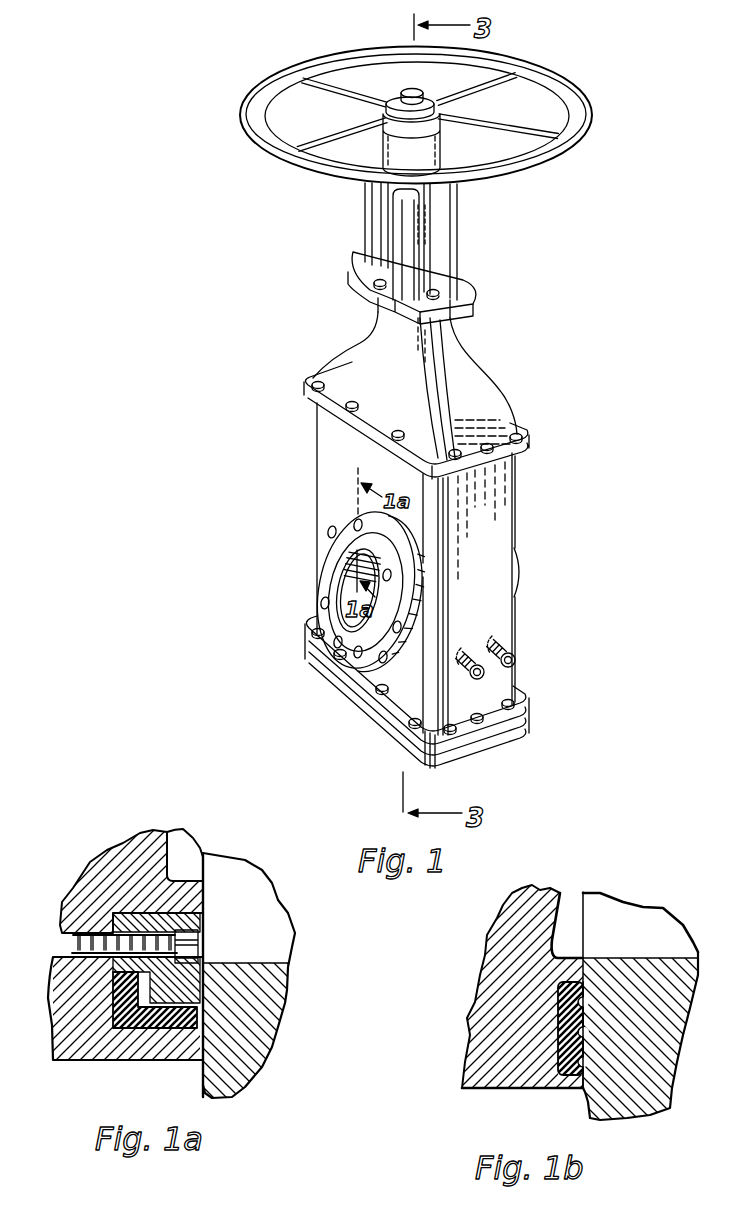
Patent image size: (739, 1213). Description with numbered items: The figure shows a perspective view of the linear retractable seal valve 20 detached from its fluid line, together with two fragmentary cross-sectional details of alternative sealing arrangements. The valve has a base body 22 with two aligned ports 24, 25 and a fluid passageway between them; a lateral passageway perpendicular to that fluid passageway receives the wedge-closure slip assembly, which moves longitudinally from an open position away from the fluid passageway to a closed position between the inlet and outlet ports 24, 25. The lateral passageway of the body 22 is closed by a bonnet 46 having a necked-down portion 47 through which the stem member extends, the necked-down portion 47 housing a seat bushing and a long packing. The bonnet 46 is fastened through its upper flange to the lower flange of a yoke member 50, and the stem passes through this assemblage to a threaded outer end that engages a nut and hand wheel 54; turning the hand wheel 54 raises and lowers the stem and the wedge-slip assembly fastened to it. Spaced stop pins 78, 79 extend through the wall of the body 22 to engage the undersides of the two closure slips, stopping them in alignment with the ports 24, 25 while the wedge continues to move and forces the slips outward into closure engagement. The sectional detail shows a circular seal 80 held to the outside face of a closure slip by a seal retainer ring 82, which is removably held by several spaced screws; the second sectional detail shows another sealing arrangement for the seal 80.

In FIG. 1, the linear retractable seal valve 20 is at (526, 500).
In FIG. 1, the base body 22 is at (505, 536).
In FIG. 1, the port 24 is at (342, 582).
In FIG. 1, the port 25 is at (519, 586).
In FIG. 1, the bonnet 46 is at (505, 401).
In FIG. 1, the necked-down portion 47 is at (452, 339).
In FIG. 1, the yoke member 50 is at (456, 241).
In FIG. 1, the hand wheel 54 is at (570, 91).
In FIG. 1, the stop pin 78 is at (484, 679).
In FIG. 1, the stop pin 79 is at (513, 660).
In FIG. 1A, the seal 80 is at (195, 1024).
In FIG. 1B, the seal 80 is at (556, 1058).
In FIG. 1A, the seal retainer ring 82 is at (204, 904).